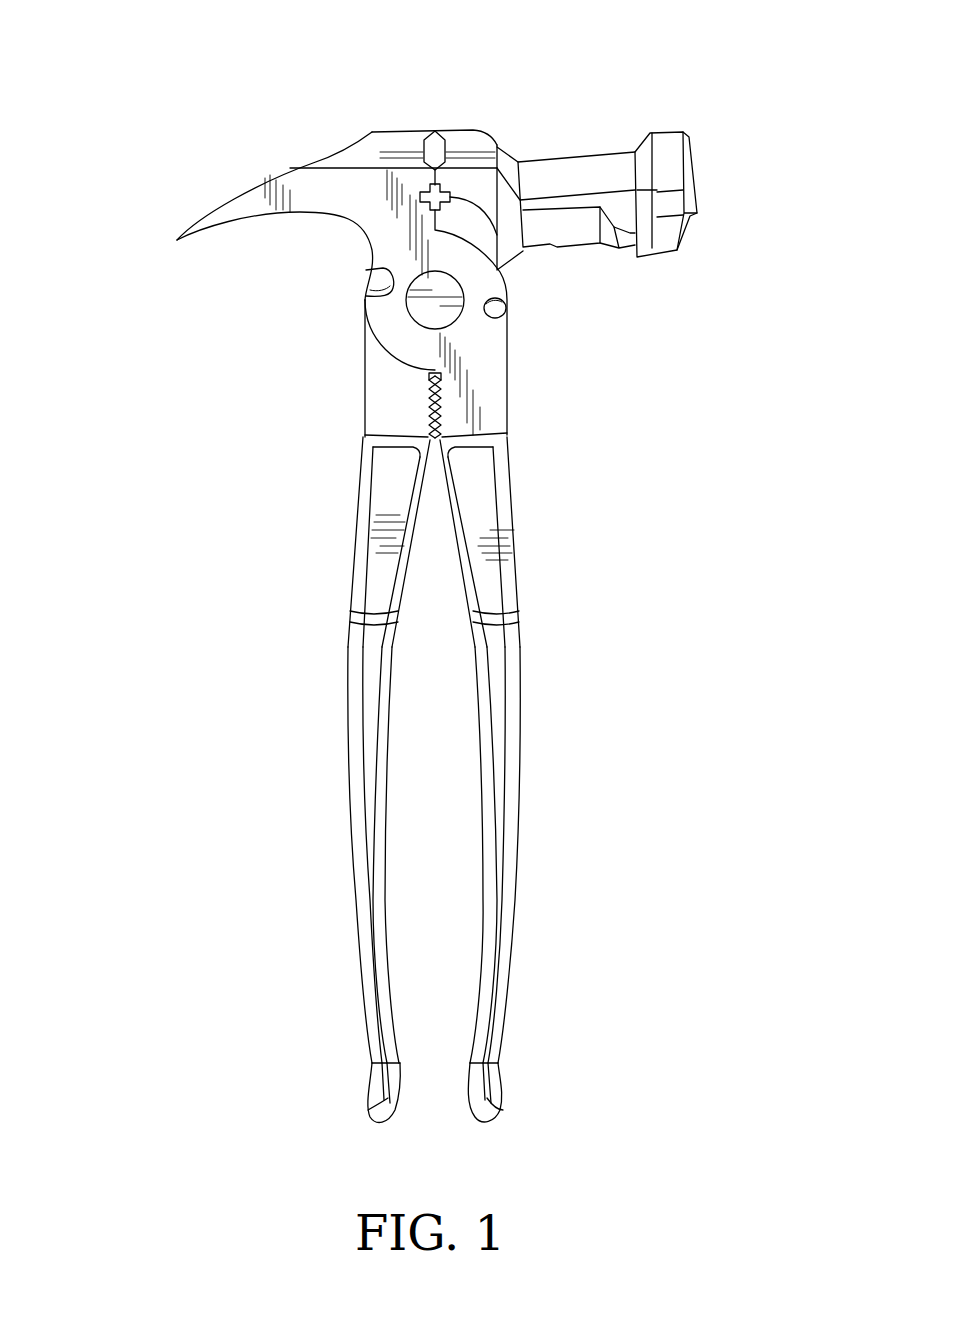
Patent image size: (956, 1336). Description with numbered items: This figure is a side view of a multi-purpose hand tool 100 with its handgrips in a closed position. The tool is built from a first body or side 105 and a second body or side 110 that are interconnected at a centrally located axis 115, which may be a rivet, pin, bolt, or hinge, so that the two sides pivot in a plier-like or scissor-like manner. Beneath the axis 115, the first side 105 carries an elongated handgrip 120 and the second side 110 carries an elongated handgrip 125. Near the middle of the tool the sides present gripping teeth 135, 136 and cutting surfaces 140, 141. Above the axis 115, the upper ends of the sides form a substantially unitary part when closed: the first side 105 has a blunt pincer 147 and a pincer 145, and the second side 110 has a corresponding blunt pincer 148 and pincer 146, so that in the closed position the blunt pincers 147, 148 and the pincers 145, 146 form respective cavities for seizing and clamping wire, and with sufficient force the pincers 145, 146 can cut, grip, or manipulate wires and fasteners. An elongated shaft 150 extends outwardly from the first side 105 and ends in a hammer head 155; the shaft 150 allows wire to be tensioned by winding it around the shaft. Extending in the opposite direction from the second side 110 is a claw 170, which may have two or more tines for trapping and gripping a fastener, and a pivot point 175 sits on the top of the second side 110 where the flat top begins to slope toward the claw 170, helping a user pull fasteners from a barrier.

The multi-purpose hand tool 100 is at (208, 632).
The first body or side 105 is at (385, 553).
The second body or side 110 is at (490, 530).
The axis 115 is at (420, 195).
The elongated handgrip 120 is at (362, 875).
The elongated handgrip 125 is at (508, 875).
The gripping teeth 135 is at (428, 400).
The gripping teeth 136 is at (440, 402).
The cutting surface 140 is at (370, 277).
The cutting surface 141 is at (500, 308).
The pincer 145 is at (437, 130).
The pincer 146 is at (430, 130).
The blunt pincer 147 is at (520, 255).
The blunt pincer 148 is at (427, 287).
The elongated shaft 150 is at (566, 163).
The hammer head 155 is at (692, 165).
The claw 170 is at (195, 220).
The pivot point 175 is at (369, 138).